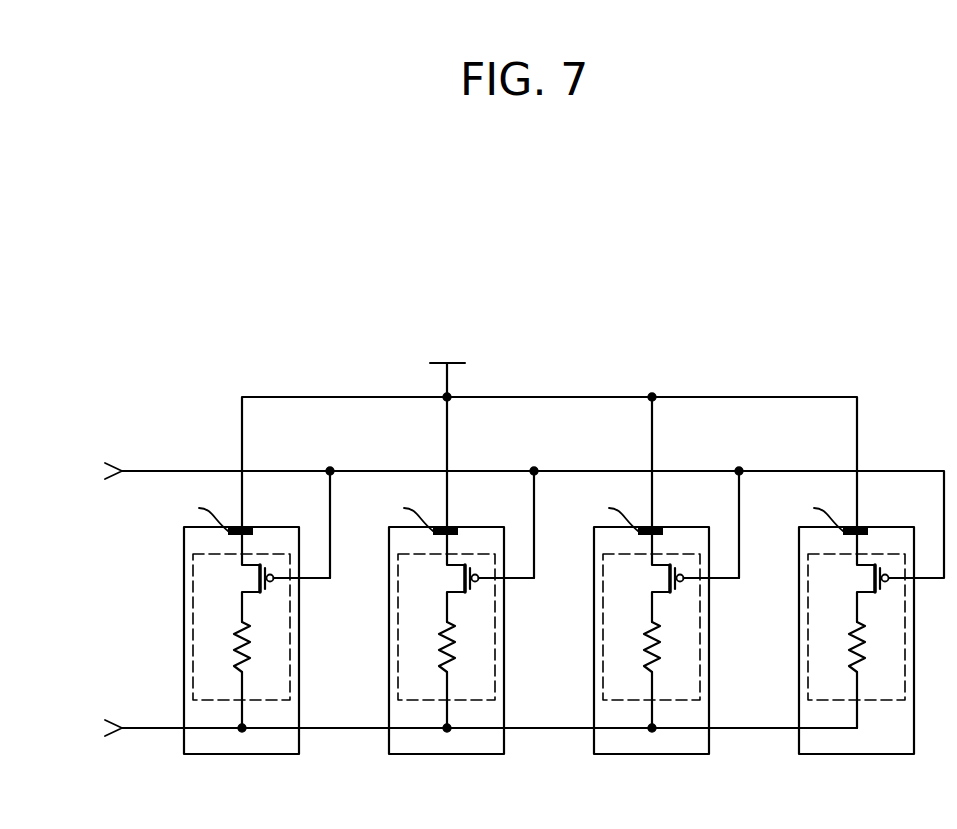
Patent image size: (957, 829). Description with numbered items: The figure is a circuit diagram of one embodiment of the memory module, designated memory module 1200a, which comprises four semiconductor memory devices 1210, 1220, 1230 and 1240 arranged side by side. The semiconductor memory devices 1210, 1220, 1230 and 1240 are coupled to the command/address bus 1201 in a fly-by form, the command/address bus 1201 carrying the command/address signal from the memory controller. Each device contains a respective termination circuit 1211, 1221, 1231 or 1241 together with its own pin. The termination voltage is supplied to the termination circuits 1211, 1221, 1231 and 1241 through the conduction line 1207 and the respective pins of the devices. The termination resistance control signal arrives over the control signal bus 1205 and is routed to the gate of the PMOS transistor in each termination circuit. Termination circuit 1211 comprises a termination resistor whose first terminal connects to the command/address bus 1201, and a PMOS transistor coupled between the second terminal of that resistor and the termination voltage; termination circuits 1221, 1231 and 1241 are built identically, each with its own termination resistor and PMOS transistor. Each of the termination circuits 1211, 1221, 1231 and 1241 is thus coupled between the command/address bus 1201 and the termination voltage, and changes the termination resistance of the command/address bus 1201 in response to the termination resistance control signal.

The memory module 1200a is at (583, 277).
The command/address bus 1201 is at (142, 728).
The control signal bus 1205 is at (140, 471).
The conduction line 1207 is at (512, 397).
The semiconductor memory device 1210 is at (275, 527).
The termination circuit 1211 is at (193, 629).
The semiconductor memory device 1220 is at (480, 527).
The termination circuit 1221 is at (398, 629).
The semiconductor memory device 1230 is at (685, 527).
The termination circuit 1231 is at (603, 629).
The semiconductor memory device 1240 is at (890, 527).
The termination circuit 1241 is at (808, 629).